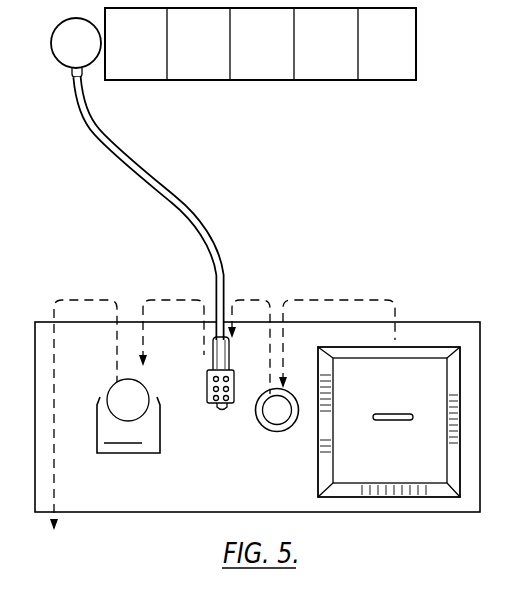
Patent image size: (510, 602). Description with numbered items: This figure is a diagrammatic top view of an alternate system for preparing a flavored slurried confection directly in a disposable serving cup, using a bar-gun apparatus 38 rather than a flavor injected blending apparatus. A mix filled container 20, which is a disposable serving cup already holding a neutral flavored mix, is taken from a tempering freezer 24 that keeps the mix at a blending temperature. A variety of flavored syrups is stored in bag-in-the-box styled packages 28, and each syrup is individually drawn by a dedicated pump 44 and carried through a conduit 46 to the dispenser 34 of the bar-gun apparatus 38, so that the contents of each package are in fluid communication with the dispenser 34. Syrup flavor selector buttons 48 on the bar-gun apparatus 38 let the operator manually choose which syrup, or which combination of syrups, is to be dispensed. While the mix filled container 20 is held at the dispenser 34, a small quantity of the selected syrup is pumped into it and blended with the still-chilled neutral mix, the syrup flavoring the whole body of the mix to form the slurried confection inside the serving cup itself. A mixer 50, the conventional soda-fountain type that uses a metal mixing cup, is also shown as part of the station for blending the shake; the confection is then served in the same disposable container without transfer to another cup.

The mix filled container 20 is at (278, 432).
The tempering freezer 24 is at (404, 399).
The bag-in-the-box styled packages 28 is at (228, 84).
The dispenser 34 is at (221, 412).
The bar-gun apparatus 38 is at (203, 421).
The dedicated pumps 44 is at (87, 54).
The conduit 46 is at (226, 250).
The syrup flavor selector buttons 48 is at (207, 390).
The mixer 50 is at (124, 397).